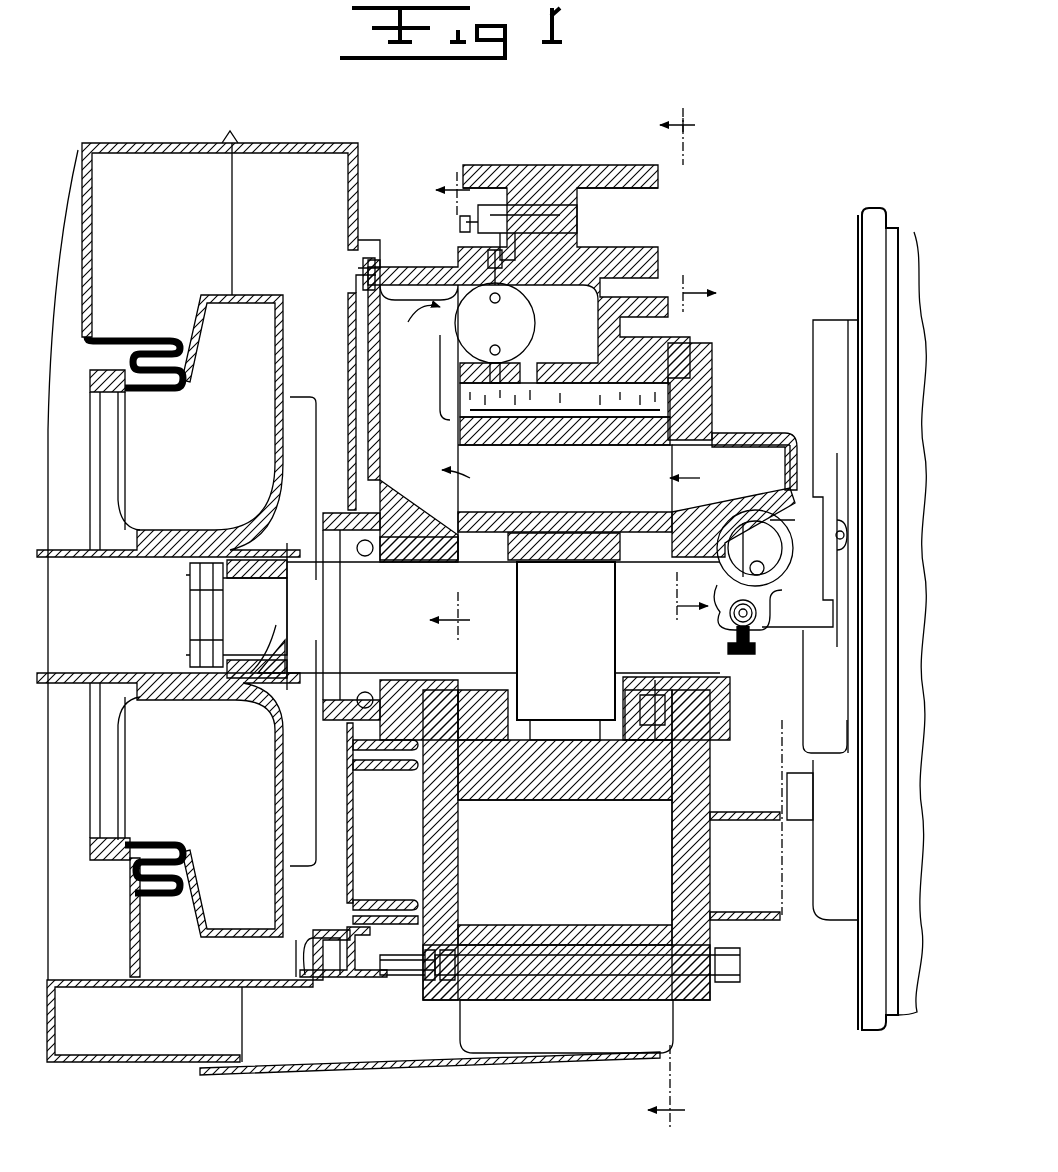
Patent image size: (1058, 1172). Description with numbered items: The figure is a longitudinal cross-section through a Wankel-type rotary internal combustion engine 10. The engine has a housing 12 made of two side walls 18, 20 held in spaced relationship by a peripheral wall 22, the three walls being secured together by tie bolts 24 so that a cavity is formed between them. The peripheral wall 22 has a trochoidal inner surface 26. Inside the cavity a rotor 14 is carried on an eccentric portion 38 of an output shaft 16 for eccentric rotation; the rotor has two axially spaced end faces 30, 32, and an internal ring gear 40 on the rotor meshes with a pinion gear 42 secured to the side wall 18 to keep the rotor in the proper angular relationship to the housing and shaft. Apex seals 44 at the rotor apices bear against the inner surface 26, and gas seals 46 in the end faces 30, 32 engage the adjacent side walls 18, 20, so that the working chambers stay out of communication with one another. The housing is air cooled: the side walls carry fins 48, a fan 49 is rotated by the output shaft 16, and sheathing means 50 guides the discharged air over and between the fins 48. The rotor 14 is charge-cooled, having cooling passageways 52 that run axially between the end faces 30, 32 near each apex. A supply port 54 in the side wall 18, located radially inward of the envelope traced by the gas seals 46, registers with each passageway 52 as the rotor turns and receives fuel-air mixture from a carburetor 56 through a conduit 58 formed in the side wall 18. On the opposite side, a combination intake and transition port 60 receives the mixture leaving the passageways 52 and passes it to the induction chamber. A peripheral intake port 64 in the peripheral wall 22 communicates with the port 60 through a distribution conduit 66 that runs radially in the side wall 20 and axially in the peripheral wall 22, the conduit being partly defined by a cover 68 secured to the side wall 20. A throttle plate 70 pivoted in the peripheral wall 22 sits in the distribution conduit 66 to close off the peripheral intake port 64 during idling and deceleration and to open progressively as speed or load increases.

The rotary internal combustion engine 10 is at (768, 148).
The housing 12 is at (690, 272).
The rotor 14 is at (565, 862).
The output shaft 16 is at (495, 682).
The side wall 18 is at (712, 362).
The side wall 20 is at (400, 275).
The peripheral wall 22 is at (660, 265).
The tie bolts 24 is at (745, 972).
The trochoidal inner surface 26 is at (638, 395).
The end face 30 is at (640, 735).
The end face 32 is at (462, 782).
The eccentric portion 38 is at (603, 652).
The internal ring gear 40 is at (558, 850).
The pinion gear 42 is at (656, 692).
The apex seals 44 is at (565, 478).
The gas seals 46 is at (433, 810).
The fins 48 is at (785, 912).
The fan 49 is at (268, 296).
The sheathing means 50 is at (140, 1070).
The cooling passageways 52 is at (600, 484).
The supply port 54 is at (725, 440).
The carburetor 56 is at (825, 640).
The conduit 58 is at (762, 484).
The intake and transition port 60 is at (460, 475).
The peripheral intake port 64 is at (565, 400).
The distribution conduit 66 is at (430, 370).
The cover 68 is at (358, 385).
The throttle plate 70 is at (520, 332).